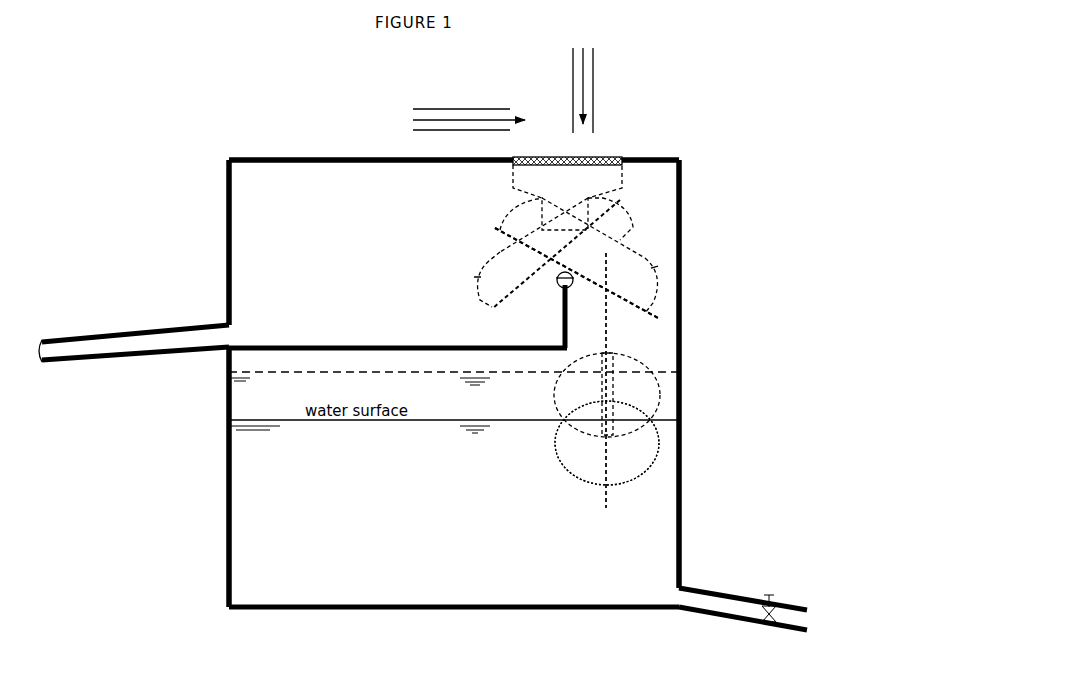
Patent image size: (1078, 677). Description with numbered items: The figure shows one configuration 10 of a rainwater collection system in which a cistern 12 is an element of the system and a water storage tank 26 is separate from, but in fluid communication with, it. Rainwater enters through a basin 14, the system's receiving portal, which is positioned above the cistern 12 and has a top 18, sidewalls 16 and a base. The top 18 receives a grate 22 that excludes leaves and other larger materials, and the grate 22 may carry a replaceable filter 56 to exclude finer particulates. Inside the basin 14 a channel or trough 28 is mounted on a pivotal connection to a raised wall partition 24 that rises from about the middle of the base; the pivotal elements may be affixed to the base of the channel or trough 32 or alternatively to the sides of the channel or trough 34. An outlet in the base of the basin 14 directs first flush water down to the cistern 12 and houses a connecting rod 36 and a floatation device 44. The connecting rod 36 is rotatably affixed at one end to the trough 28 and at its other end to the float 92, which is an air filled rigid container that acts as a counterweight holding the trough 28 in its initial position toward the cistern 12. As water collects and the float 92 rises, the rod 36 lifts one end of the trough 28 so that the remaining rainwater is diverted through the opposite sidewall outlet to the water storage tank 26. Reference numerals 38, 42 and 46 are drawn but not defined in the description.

The configuration 10 is at (345, 71).
The cistern 12 is at (265, 517).
The basin 14 is at (371, 244).
The sidewalls 16 is at (222, 239).
The top 18 is at (319, 157).
The grate 22 is at (634, 147).
The raised wall partition 24 is at (558, 317).
The water storage tank 26 is at (44, 329).
The channel or trough 28 is at (639, 288).
The base of the channel or trough 32 is at (649, 322).
The sides of the channel or trough 34 is at (641, 249).
The connecting rod 36 is at (601, 494).
The shaft axis 38 is at (610, 258).
The upper float 42 is at (620, 396).
The floatation device 44 is at (607, 489).
The air flow 46 is at (563, 78).
The filter 56 is at (606, 156).
The float 92 is at (628, 482).